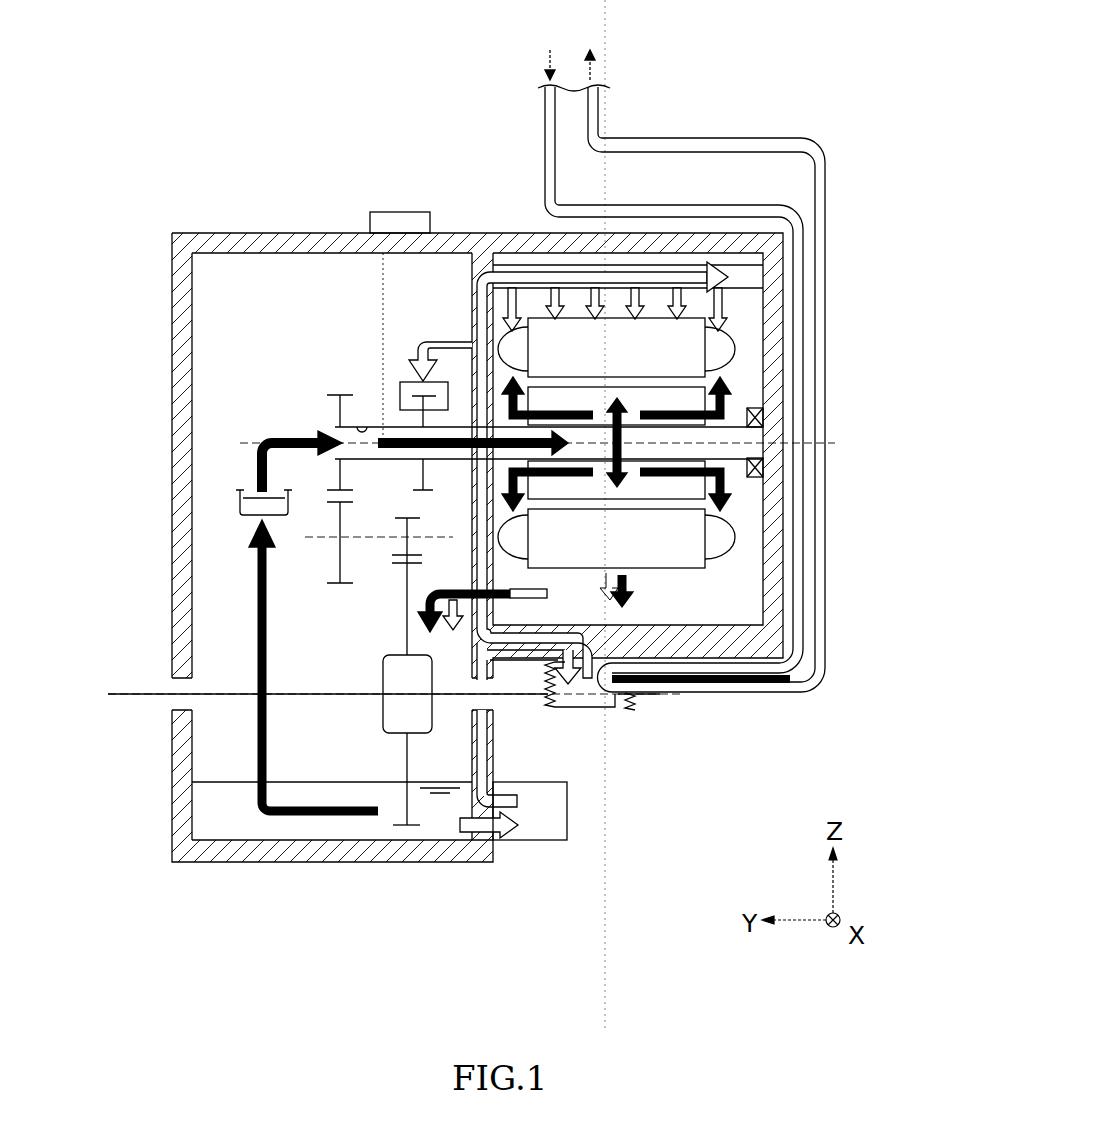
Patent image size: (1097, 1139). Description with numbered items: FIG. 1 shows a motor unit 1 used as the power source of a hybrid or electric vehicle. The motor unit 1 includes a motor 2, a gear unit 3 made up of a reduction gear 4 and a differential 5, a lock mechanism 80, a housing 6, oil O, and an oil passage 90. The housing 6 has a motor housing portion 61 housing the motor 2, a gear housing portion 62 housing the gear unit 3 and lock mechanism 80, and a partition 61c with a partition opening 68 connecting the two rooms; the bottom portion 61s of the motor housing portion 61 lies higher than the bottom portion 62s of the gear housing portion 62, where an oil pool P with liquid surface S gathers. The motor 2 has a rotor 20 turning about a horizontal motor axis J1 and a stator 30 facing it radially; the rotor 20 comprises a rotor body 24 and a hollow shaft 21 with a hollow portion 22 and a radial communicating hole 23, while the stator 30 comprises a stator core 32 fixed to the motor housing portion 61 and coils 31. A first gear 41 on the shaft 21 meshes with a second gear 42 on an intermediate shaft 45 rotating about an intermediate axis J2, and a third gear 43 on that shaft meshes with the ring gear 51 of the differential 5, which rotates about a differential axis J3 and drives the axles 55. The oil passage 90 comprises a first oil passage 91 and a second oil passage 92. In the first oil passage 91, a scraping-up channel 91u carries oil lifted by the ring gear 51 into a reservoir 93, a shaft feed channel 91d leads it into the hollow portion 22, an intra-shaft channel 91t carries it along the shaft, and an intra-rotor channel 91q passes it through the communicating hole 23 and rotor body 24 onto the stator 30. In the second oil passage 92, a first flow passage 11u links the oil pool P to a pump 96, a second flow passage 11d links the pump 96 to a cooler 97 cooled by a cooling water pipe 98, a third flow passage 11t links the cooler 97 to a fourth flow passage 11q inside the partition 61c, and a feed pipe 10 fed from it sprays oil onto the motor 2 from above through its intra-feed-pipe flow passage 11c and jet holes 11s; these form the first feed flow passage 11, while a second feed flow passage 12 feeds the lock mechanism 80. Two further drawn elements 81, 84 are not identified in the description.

The motor unit 1 is at (788, 86).
The motor 2 is at (567, 420).
The gear unit 3 is at (338, 434).
The reduction gear 4 is at (375, 587).
The differential 5 is at (364, 780).
The housing 6 is at (786, 228).
The feed pipe 10 is at (706, 371).
The first feed flow passage 11 is at (553, 487).
The intra-feed-pipe flow passage 11c is at (647, 271).
The second flow passage 11d is at (490, 739).
The fourth flow passage 11q is at (480, 576).
The jet holes 11s is at (687, 297).
The third flow passage 11t is at (568, 624).
The first flow passage 11u is at (471, 831).
The second feed flow passage 12 is at (470, 322).
The rotor 20 is at (710, 390).
The shaft 21 is at (378, 425).
The hollow portion 22 is at (362, 426).
The communicating hole 23 is at (759, 468).
The rotor body 24 is at (754, 404).
The stator 30 is at (696, 431).
The coils 31 is at (705, 360).
The stator core 32 is at (712, 382).
The first gear 41 is at (342, 393).
The second gear 42 is at (343, 586).
The third gear 43 is at (402, 563).
The intermediate shaft 45 is at (368, 537).
The ring gear 51 is at (407, 841).
The axles 55 is at (232, 695).
The motor housing portion 61 is at (505, 230).
The partition 61c is at (450, 246).
The bottom portion 61s is at (722, 634).
The gear housing portion 62 is at (332, 524).
The bottom portion 62s is at (262, 841).
The partition opening 68 is at (495, 603).
The lock mechanism 80 is at (390, 209).
The gear 81 is at (420, 492).
The oil supply device 84 is at (449, 398).
The oil passage 90 is at (383, 679).
The first oil passage 91 is at (383, 657).
The shaft feed channel 91d is at (300, 430).
The intra-rotor channel 91q is at (728, 485).
The intra-shaft channel 91t is at (378, 447).
The scraping-up channel 91u is at (256, 592).
The second oil passage 92 is at (477, 753).
The reservoir 93 is at (240, 502).
The pump 96 is at (548, 841).
The cooler 97 is at (583, 710).
The cooling water pipe 98 is at (827, 645).
The motor axis J1 is at (788, 443).
The intermediate axis J2 is at (433, 537).
The differential axis J3 is at (625, 705).
The liquid surface S is at (227, 782).
The oil O is at (440, 823).
The oil pool P is at (188, 818).